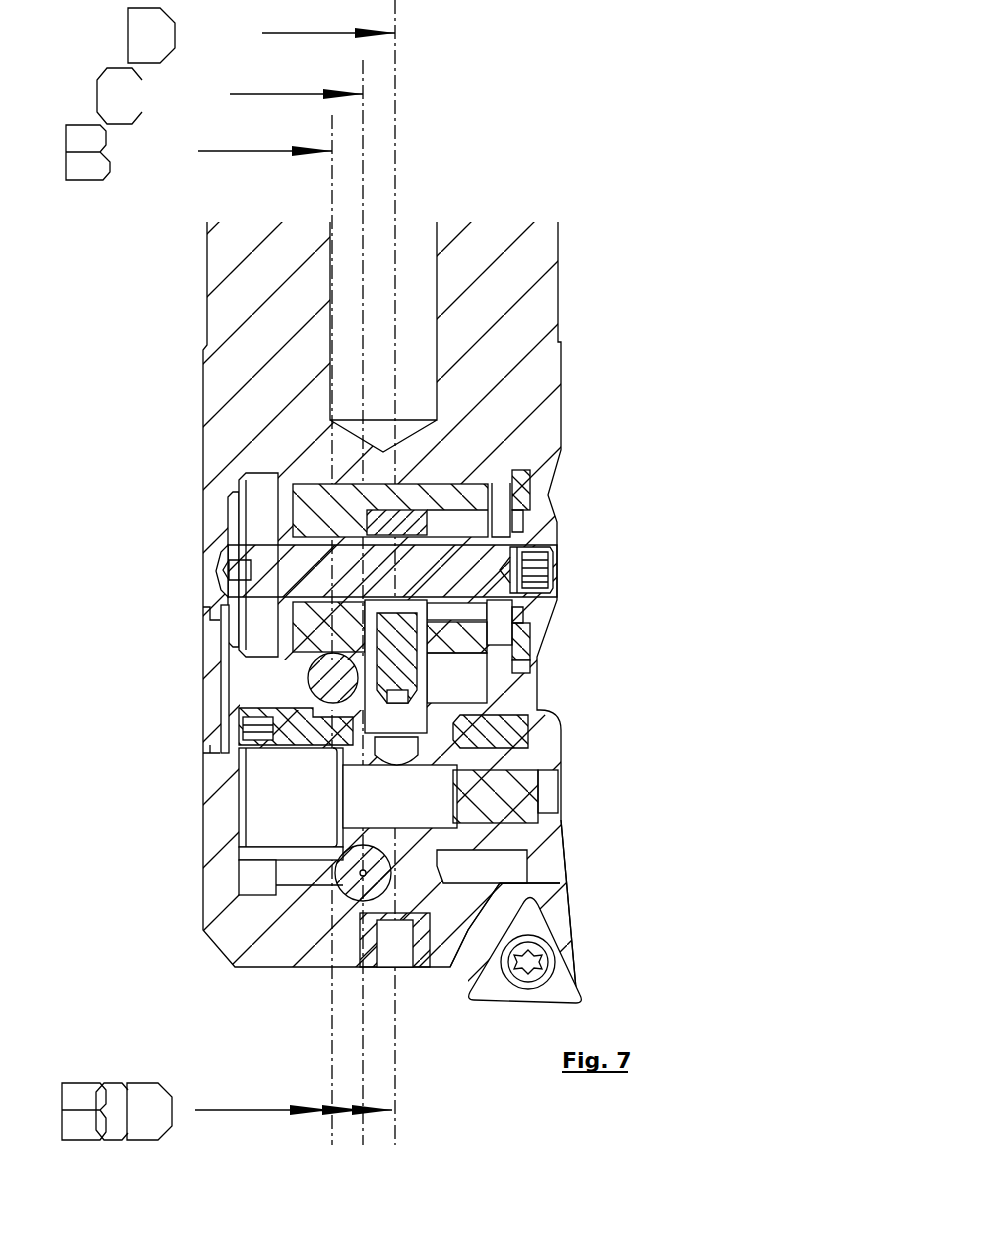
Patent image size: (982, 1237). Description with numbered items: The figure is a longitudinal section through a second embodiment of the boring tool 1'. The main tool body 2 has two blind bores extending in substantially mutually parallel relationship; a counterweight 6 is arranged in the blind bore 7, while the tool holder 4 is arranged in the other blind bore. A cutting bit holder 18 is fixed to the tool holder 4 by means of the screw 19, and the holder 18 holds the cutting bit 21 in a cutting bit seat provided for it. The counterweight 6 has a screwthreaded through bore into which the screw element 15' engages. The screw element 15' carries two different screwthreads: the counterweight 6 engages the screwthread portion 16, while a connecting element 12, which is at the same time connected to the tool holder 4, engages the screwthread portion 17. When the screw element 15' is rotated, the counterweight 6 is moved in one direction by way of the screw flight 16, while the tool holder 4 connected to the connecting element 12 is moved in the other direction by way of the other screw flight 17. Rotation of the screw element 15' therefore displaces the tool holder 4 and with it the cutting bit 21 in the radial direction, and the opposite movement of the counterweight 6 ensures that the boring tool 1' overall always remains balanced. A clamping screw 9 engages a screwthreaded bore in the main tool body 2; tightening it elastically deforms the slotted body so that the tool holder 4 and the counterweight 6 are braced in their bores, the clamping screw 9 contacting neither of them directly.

The boring tool 1' is at (307, 611).
The main tool body 2 is at (563, 392).
The tool holder 4 is at (537, 817).
The counterweight 6 is at (552, 470).
The blind bore 7 is at (283, 522).
The clamping screw 9 is at (310, 677).
The connecting element 12 is at (423, 672).
The screw element 15' is at (569, 545).
The screwthread portion 16 is at (313, 600).
The screwthread portion 17 is at (423, 607).
The cutting bit holder 18 is at (560, 892).
The screw 19 is at (562, 752).
The cutting bit 21 is at (565, 985).